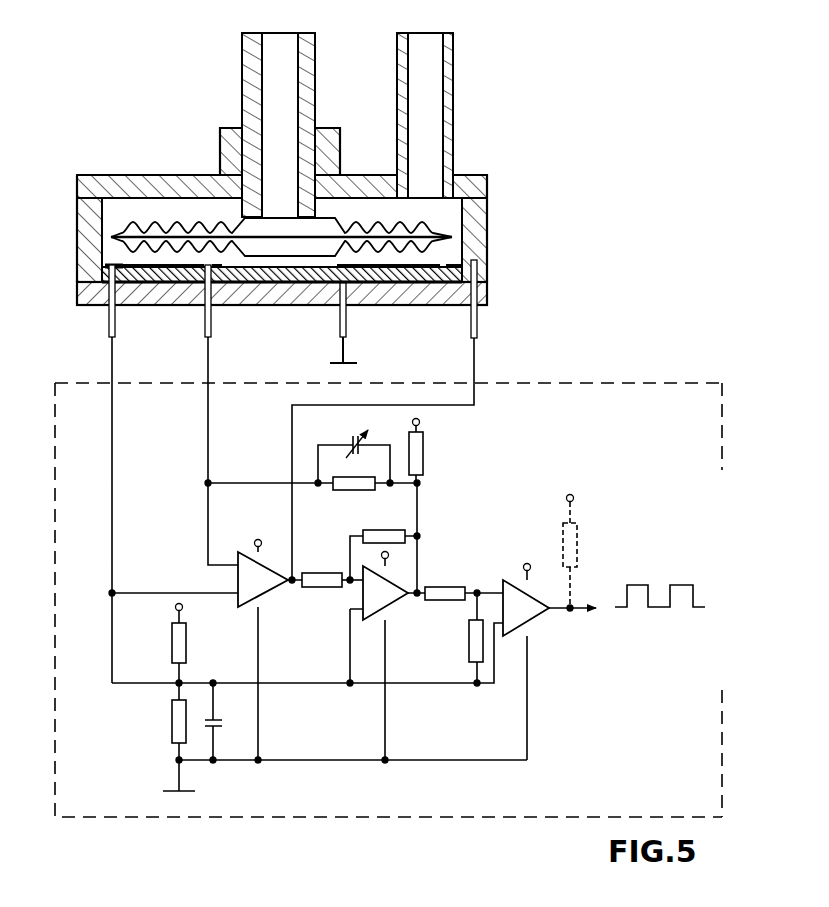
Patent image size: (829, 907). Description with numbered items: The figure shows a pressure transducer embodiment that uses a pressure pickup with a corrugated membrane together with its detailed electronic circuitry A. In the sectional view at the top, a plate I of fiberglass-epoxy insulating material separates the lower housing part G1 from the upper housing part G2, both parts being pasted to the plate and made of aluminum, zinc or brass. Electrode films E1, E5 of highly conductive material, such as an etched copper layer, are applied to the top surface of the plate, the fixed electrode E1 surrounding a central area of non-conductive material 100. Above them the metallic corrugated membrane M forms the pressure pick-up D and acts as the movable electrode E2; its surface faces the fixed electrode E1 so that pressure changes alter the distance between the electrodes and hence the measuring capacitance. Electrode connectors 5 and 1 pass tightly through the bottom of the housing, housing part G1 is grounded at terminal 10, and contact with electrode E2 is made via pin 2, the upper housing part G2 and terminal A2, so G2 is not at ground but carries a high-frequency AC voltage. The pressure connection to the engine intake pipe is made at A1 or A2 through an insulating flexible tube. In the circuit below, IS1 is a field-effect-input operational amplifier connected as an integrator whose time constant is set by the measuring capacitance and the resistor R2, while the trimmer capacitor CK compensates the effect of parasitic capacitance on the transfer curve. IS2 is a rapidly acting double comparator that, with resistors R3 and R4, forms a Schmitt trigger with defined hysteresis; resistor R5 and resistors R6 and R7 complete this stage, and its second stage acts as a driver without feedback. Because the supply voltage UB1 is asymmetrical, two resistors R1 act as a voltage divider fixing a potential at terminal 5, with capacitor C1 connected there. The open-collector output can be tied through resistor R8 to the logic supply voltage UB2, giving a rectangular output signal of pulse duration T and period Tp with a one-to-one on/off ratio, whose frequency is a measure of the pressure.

The non-conductive material 100 is at (282, 338).
The upper housing part G2 is at (487, 193).
The lower housing part G1 is at (103, 293).
The pressure connection terminal A1 is at (436, 72).
The pressure connection terminal A2 is at (290, 72).
The pressure pick-up D is at (357, 214).
The insulating plate I is at (490, 272).
The corrugated membrane M is at (242, 232).
The fixed electrode E1 is at (428, 263).
The movable electrode E2 is at (175, 263).
The electrode film E5 is at (108, 263).
The electrode connector 5 is at (115, 330).
The electrode connector 1 is at (211, 330).
The ground terminal 10 is at (346, 330).
The pin 2 is at (478, 330).
The electronic circuitry A is at (693, 383).
The operational amplifier IS1 is at (270, 655).
The double comparator IS2 is at (471, 658).
The voltage divider resistor R1 is at (173, 700).
The integration resistor R2 is at (354, 499).
The hysteresis resistor R3 is at (332, 593).
The hysteresis resistor R4 is at (385, 545).
The resistor R5 is at (427, 455).
The resistor R6 is at (464, 609).
The resistor R7 is at (466, 639).
The pull-up resistor R8 is at (582, 555).
The capacitor C1 is at (224, 721).
The trimmer capacitor CK is at (354, 449).
The supply voltage UB1 is at (360, 519).
The logic supply voltage UB2 is at (585, 503).
The pulse duration T is at (661, 562).
The period Tp is at (669, 632).